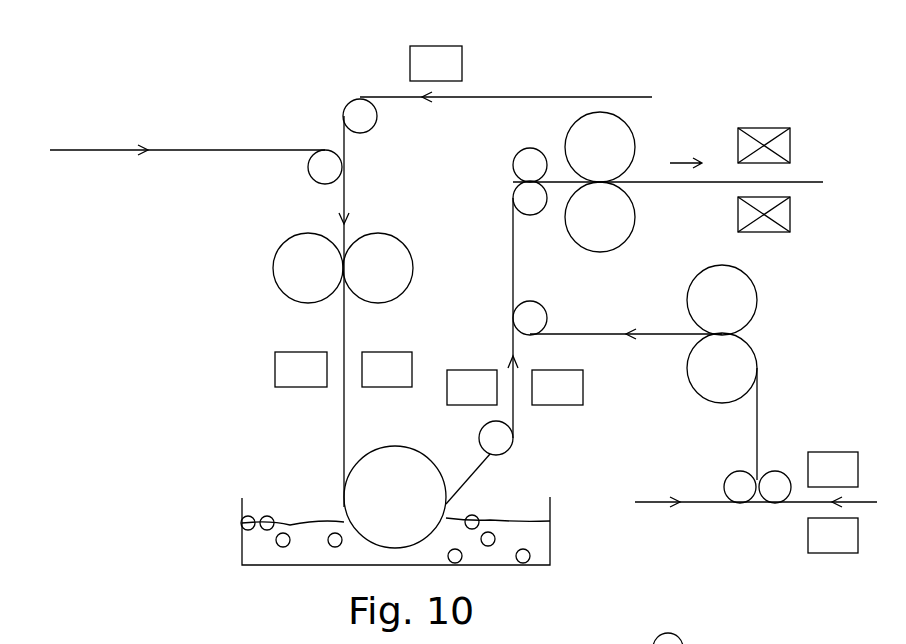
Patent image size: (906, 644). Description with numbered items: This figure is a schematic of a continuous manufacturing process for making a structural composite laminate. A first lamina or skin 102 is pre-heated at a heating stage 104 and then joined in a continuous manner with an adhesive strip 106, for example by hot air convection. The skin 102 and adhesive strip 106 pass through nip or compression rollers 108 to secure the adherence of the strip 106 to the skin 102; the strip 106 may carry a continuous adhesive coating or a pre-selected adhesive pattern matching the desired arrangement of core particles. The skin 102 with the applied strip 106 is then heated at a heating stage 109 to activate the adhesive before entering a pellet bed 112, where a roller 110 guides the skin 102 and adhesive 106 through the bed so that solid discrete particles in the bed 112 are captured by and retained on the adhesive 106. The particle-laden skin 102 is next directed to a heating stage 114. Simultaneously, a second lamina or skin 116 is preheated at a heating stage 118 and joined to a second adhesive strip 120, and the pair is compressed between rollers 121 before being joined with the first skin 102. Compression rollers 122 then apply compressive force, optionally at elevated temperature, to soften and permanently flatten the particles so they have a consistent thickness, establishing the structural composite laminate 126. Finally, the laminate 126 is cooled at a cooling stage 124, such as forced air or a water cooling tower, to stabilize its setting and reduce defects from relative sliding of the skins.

The first lamina or skin 102 is at (547, 97).
The heating stage 104 is at (428, 64).
The adhesive strip 106 is at (85, 150).
The nip or compression rollers 108 is at (292, 271).
The heating stage 109 is at (292, 370).
The roller 110 is at (362, 506).
The pellet bed 112 is at (257, 549).
The heating stage 114 is at (583, 391).
The second lamina or skin 116 is at (810, 502).
The heating stage 118 is at (827, 466).
The second adhesive strip 120 is at (705, 502).
The rollers 121 is at (722, 282).
The compression rollers 122 is at (570, 133).
The cooling stage 124 is at (760, 128).
The structural composite laminate 126 is at (703, 182).